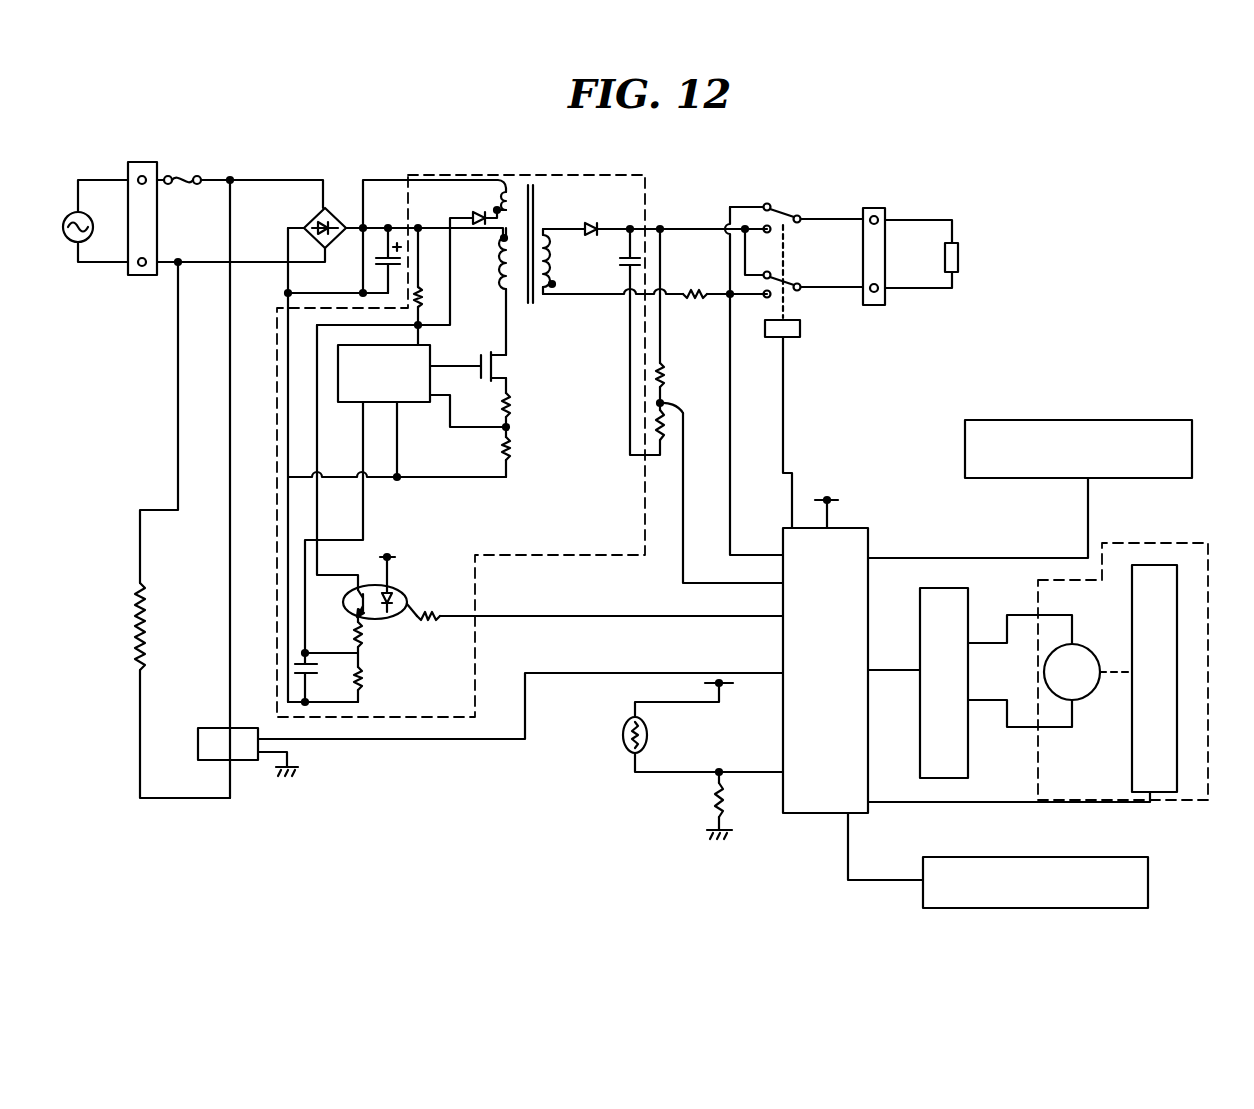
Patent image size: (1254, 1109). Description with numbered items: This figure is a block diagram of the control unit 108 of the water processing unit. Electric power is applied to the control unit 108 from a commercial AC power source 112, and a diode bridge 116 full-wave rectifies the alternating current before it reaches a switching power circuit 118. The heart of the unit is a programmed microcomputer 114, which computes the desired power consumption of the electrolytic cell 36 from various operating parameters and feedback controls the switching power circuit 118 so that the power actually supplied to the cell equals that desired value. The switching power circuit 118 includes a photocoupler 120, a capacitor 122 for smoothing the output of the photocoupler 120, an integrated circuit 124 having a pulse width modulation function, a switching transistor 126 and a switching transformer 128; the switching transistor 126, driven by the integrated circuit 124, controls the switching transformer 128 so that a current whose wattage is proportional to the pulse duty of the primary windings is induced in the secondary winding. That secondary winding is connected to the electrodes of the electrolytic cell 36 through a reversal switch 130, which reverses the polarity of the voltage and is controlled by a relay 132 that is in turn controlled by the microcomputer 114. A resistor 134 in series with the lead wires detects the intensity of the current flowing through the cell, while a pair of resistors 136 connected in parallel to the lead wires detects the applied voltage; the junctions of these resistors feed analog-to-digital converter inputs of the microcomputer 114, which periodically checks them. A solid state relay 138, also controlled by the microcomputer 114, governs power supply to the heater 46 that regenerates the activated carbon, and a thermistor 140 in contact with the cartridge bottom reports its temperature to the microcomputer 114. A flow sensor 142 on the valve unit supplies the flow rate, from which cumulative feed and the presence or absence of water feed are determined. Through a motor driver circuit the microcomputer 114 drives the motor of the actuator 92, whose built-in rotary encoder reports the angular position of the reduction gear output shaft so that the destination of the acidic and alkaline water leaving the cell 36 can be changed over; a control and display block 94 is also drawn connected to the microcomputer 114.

The electrolytic cell 36 is at (960, 262).
The heater 46 is at (153, 620).
The actuator 92 is at (1178, 543).
The control and display 94 is at (1127, 420).
The control unit 108 is at (1088, 307).
The commercial AC power source 112 is at (80, 243).
The programmed microcomputer 114 is at (817, 816).
The diode bridge 116 is at (340, 212).
The switching power circuit 118 is at (527, 173).
The photocoupler 120 is at (387, 620).
The capacitor 122 is at (317, 672).
The integrated circuit 124 is at (417, 403).
The switching transistor 126 is at (484, 343).
The switching transformer 128 is at (548, 212).
The reversal switch 130 is at (783, 198).
The relay 132 is at (805, 335).
The resistor 134 is at (697, 290).
The resistors 136 is at (668, 400).
The solid state relay 138 is at (242, 762).
The thermistor 140 is at (622, 740).
The flow sensor 142 is at (1105, 843).